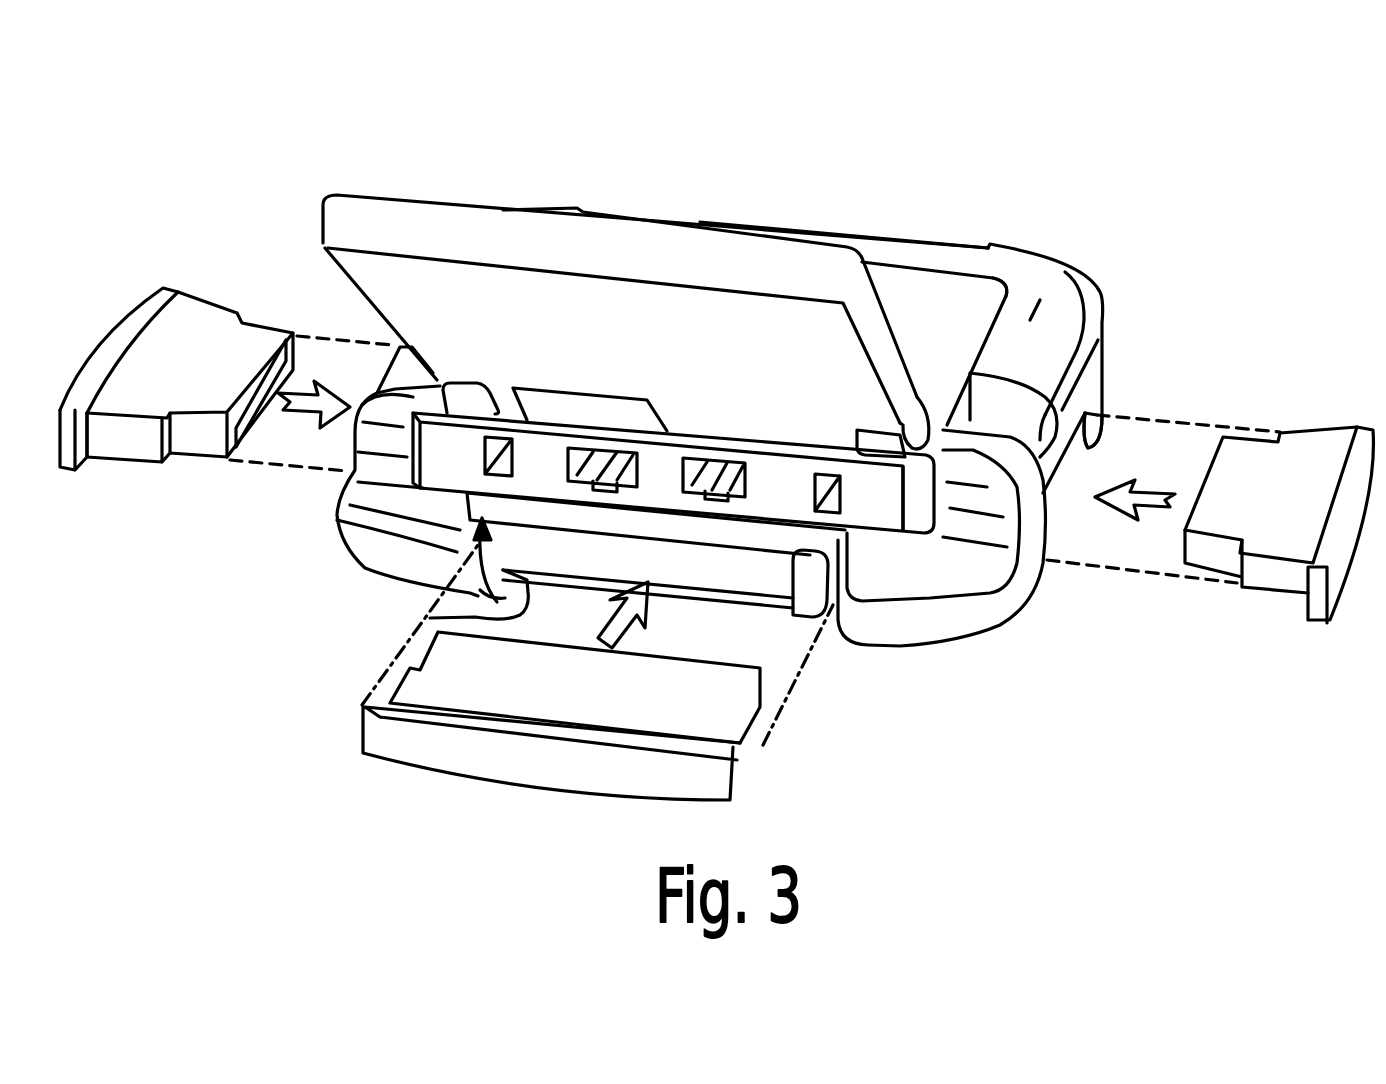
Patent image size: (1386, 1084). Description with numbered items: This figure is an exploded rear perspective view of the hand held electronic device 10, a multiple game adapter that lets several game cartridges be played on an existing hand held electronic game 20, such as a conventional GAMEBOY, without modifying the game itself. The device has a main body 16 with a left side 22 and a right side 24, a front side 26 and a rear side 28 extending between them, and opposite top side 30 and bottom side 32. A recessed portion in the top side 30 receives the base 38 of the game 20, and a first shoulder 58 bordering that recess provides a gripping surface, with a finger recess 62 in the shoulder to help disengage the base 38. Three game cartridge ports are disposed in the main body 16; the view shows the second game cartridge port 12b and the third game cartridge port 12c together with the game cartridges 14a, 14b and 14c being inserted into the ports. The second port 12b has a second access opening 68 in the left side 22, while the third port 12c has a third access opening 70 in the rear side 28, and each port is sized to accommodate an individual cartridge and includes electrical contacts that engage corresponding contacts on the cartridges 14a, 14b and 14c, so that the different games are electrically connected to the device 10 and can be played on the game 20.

The hand held electronic device 10 is at (300, 497).
The second game cartridge port 12b is at (1047, 537).
The third game cartridge port 12c is at (503, 565).
The first game cartridge 14a is at (205, 327).
The second game cartridge 14b is at (1293, 460).
The third game cartridge 14c is at (687, 713).
The main body 16 is at (990, 620).
The hand held electronic game 20 is at (318, 208).
The left side 22 is at (1133, 297).
The right side 24 is at (550, 207).
The front side 26 is at (890, 237).
The rear side 28 is at (807, 547).
The top side 30 is at (996, 285).
The bottom side 32 is at (445, 617).
The base 38 is at (918, 290).
The first shoulder 58 is at (1030, 320).
The finger recess 62 is at (1047, 410).
The second access opening 68 is at (1093, 448).
The third access opening 70 is at (475, 572).